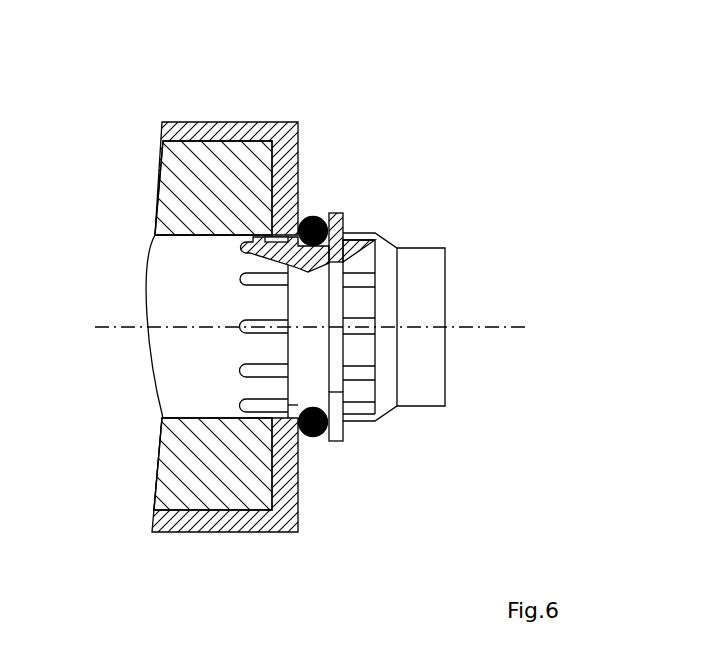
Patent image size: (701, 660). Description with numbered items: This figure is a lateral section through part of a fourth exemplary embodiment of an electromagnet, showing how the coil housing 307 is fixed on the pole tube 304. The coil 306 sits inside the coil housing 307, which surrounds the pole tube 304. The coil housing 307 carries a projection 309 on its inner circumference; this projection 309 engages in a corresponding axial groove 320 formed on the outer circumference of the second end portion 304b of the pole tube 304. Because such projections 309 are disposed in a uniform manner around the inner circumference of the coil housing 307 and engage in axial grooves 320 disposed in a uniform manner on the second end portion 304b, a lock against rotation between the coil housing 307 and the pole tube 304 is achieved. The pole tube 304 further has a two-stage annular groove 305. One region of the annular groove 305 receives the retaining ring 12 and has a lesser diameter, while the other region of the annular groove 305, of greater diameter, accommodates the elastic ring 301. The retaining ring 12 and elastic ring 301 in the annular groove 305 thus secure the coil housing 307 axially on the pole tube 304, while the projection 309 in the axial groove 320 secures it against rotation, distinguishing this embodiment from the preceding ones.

The retaining ring 12 is at (333, 423).
The elastic ring 301 is at (318, 177).
The pole tube 304 is at (224, 304).
The second end portion 304b is at (490, 283).
The annular groove 305 is at (308, 360).
The coil 306 is at (236, 199).
The coil housing 307 is at (225, 122).
The projection 309 is at (285, 240).
The axial groove 320 is at (352, 233).